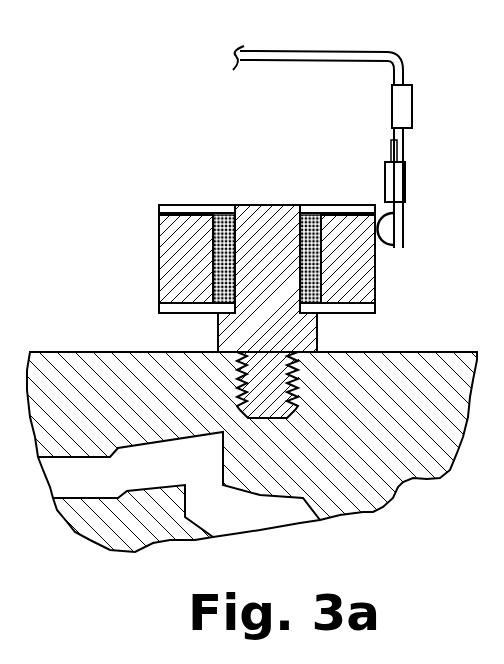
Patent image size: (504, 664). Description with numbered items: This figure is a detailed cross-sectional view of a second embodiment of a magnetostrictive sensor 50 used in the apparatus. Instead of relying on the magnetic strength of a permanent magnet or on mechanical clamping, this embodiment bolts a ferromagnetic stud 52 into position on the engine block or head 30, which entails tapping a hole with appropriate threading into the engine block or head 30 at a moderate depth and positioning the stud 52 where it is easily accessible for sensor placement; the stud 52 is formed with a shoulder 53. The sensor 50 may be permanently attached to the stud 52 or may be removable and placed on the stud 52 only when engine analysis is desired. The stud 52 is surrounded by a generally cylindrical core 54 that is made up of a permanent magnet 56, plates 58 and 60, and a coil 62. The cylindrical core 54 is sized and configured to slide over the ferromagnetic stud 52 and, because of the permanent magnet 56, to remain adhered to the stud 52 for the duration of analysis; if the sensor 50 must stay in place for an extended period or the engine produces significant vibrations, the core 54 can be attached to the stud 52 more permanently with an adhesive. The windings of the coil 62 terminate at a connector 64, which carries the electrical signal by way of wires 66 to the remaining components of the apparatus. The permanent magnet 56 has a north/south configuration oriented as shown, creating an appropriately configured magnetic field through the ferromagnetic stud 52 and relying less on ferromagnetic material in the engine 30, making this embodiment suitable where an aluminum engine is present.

The engine block or head 30 is at (375, 512).
The sensor 50 is at (120, 183).
The ferromagnetic stud 52 is at (268, 205).
The shoulder 53 is at (218, 333).
The cylindrical core 54 is at (384, 266).
The permanent magnet 56 is at (159, 265).
The plate 58 is at (167, 313).
The plate 60 is at (348, 205).
The coil 62 is at (313, 308).
The connector 64 is at (405, 188).
The wires 66 is at (305, 52).